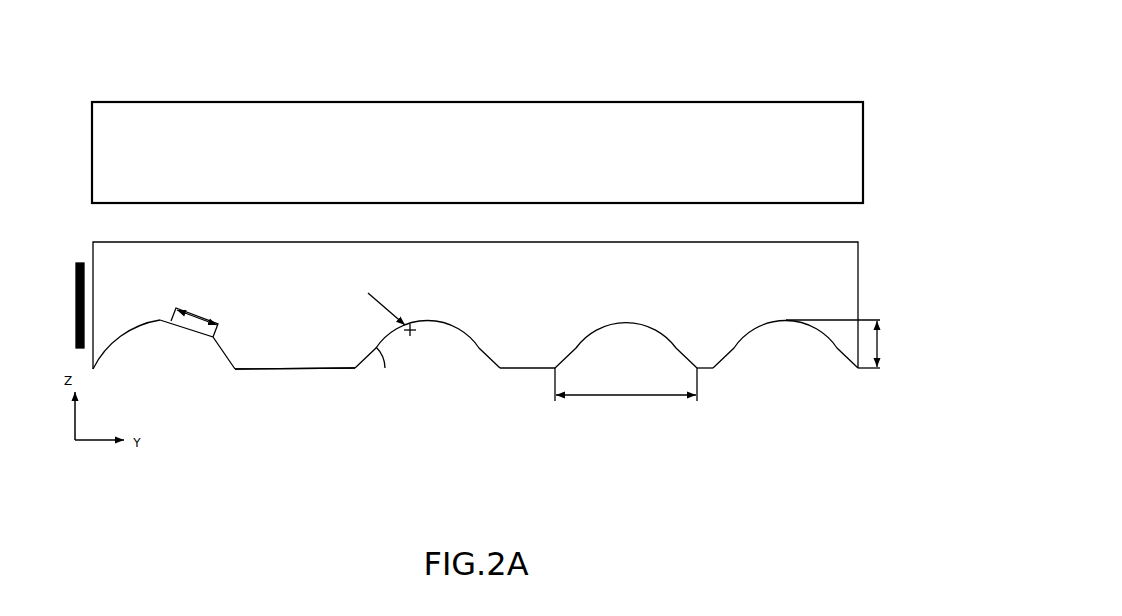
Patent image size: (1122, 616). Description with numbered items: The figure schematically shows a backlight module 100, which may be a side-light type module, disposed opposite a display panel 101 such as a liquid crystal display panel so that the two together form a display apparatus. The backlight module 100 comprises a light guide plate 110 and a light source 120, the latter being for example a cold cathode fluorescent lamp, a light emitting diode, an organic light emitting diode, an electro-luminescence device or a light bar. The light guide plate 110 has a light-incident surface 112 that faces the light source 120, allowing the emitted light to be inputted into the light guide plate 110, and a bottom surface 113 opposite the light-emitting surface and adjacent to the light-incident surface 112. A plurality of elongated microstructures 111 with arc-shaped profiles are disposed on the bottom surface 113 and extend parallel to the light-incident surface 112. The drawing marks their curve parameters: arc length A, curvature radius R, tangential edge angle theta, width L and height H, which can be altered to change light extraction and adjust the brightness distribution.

The backlight module 100 is at (83, 238).
The display panel 101 is at (723, 101).
The light guide plate 110 is at (512, 354).
The elongated microstructures 111 is at (189, 338).
The light-incident surface 112 is at (104, 324).
The bottom surface 113 is at (338, 374).
The light source 120 is at (72, 330).